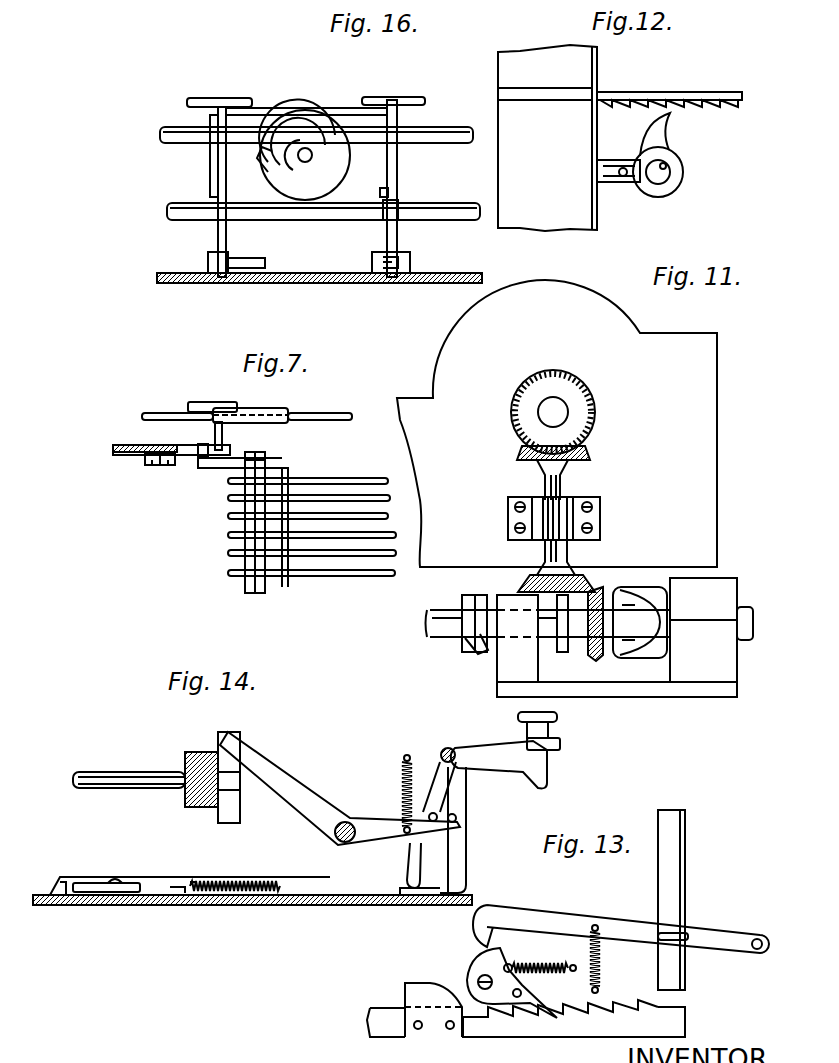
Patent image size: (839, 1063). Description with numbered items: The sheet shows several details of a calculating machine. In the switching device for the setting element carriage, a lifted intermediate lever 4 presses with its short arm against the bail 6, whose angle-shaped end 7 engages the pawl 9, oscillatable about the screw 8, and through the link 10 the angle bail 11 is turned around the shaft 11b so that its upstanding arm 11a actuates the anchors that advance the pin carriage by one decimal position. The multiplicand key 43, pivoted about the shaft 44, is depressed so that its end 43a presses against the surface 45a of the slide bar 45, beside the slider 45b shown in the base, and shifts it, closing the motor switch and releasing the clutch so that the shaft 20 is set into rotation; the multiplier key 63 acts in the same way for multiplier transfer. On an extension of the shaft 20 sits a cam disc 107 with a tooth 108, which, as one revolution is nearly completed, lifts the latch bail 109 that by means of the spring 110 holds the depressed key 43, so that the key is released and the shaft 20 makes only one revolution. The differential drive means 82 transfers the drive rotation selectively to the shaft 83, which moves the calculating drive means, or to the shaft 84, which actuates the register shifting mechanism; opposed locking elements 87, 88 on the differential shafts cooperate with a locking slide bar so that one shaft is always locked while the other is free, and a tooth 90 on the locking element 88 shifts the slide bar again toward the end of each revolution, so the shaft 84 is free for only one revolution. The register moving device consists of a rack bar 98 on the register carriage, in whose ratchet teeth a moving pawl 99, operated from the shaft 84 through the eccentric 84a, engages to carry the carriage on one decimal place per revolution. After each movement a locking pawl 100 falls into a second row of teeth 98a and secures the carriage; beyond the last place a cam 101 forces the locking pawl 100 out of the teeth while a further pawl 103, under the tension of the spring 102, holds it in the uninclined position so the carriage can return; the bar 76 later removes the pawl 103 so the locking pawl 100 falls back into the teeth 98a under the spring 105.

In FIG. 7, the intermediate lever 4 is at (350, 483).
In FIG. 7, the bail 6 is at (283, 467).
In FIG. 7, the angle-shaped end 7 is at (200, 448).
In FIG. 7, the screw 8 is at (157, 465).
In FIG. 7, the pawl 9 is at (195, 456).
In FIG. 7, the link 10 is at (223, 444).
In FIG. 7, the angle bail 11 is at (252, 417).
In FIG. 7, the upstanding arm 11a is at (197, 402).
In FIG. 7, the shaft 11b is at (327, 412).
In FIG. 16, the shaft 20 is at (312, 160).
In FIG. 14, the shaft 20 is at (118, 779).
In FIG. 16, the multiplicand key 43 is at (214, 97).
In FIG. 14, the multiplicand key 43 is at (532, 776).
In FIG. 16, the end of key 43a is at (213, 268).
In FIG. 14, the end of key 43a is at (408, 868).
In FIG. 16, the shaft 44 is at (431, 128).
In FIG. 11, the shaft 44 is at (609, 644).
In FIG. 14, the shaft 44 is at (452, 749).
In FIG. 14, the slide bar 45 is at (288, 908).
In FIG. 14, the surface of slide bar 45a is at (393, 905).
In FIG. 14, the slider 45b is at (93, 888).
In FIG. 16, the multiplier key 63 is at (392, 96).
In FIG. 13, the bar 76 is at (683, 897).
In FIG. 11, the differential drive means 82 is at (640, 580).
In FIG. 11, the shaft 83 is at (557, 406).
In FIG. 12, the shaft 84 is at (666, 165).
In FIG. 11, the shaft 84 is at (444, 626).
In FIG. 12, the eccentric 84a is at (657, 182).
In FIG. 11, the opposed locking element 87 is at (562, 651).
In FIG. 11, the opposed locking element 88 is at (465, 604).
In FIG. 11, the tooth 90 is at (473, 646).
In FIG. 12, the rack bar 98 is at (645, 98).
In FIG. 13, the rack bar 98 is at (610, 1027).
In FIG. 13, the second row of teeth 98a is at (607, 1010).
In FIG. 12, the moving pawl 99 is at (655, 140).
In FIG. 13, the locking pawl 100 is at (473, 972).
In FIG. 13, the cam 101 is at (420, 997).
In FIG. 13, the spring 102 is at (602, 973).
In FIG. 13, the further pawl 103 is at (534, 918).
In FIG. 13, the spring 105 is at (541, 963).
In FIG. 16, the cam disc 107 is at (309, 122).
In FIG. 14, the cam disc 107 is at (228, 805).
In FIG. 16, the tooth 108 is at (263, 170).
In FIG. 14, the tooth 108 is at (242, 758).
In FIG. 16, the latch bail 109 is at (266, 110).
In FIG. 14, the latch bail 109 is at (333, 816).
In FIG. 14, the spring 110 is at (402, 778).